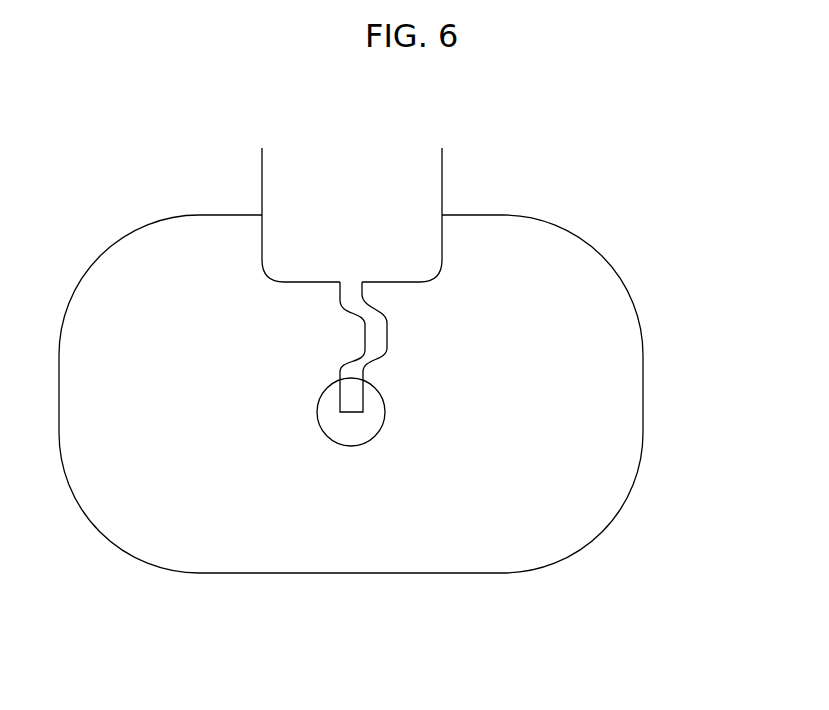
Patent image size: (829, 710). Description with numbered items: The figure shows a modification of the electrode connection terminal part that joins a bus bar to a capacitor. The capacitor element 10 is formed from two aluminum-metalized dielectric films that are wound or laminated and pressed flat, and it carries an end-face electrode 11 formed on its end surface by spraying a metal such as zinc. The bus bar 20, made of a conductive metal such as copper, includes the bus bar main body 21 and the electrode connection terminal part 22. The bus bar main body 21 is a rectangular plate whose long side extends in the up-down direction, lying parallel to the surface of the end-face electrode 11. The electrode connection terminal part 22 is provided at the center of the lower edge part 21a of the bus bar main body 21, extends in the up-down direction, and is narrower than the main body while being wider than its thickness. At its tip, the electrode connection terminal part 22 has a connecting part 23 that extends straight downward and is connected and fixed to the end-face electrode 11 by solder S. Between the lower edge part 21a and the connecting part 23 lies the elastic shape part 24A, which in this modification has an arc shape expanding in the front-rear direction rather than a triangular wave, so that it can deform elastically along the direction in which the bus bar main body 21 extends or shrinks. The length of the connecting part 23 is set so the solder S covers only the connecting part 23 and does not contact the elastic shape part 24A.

The capacitor element 10 is at (362, 348).
The end-face electrode 11 is at (590, 298).
The bus bar 20 is at (397, 287).
The bus bar main body 21 is at (442, 180).
The lower edge part 21a is at (300, 282).
The electrode connection terminal part 22 is at (421, 379).
The connecting part 23 is at (365, 397).
The elastic shape part 24A is at (387, 323).
The solder S is at (340, 447).